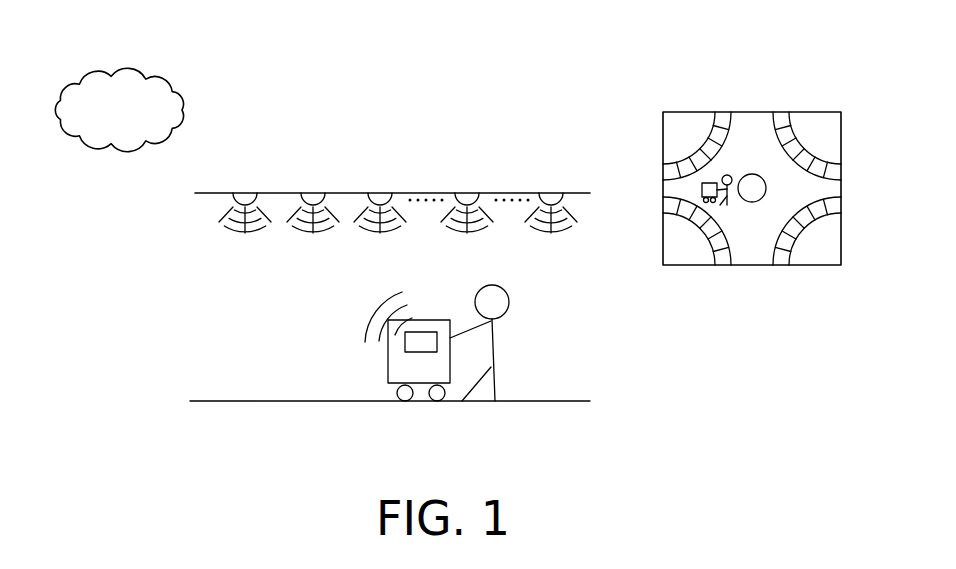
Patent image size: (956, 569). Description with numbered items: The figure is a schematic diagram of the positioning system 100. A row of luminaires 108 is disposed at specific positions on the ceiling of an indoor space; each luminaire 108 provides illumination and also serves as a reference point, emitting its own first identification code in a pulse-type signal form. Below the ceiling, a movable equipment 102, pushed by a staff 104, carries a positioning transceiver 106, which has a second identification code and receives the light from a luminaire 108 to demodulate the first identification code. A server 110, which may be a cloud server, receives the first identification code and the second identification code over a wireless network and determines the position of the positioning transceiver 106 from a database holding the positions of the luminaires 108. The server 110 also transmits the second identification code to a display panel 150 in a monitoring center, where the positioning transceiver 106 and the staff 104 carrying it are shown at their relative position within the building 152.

The positioning system 100 is at (682, 447).
The movable equipment 102 is at (432, 320).
The staff 104 is at (494, 338).
The positioning transceiver 106 is at (405, 342).
The luminaire 108 is at (553, 196).
The server 110 is at (82, 77).
The display panel 150 is at (808, 112).
The building 152 is at (712, 140).